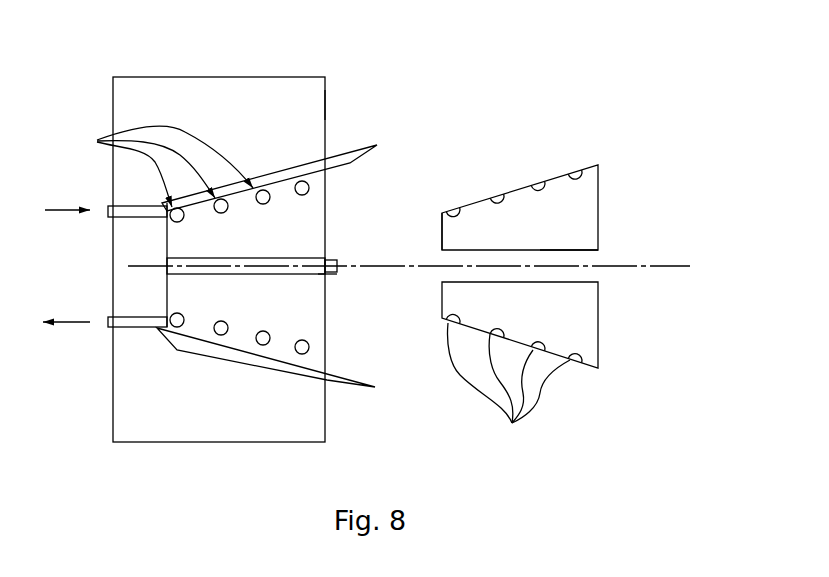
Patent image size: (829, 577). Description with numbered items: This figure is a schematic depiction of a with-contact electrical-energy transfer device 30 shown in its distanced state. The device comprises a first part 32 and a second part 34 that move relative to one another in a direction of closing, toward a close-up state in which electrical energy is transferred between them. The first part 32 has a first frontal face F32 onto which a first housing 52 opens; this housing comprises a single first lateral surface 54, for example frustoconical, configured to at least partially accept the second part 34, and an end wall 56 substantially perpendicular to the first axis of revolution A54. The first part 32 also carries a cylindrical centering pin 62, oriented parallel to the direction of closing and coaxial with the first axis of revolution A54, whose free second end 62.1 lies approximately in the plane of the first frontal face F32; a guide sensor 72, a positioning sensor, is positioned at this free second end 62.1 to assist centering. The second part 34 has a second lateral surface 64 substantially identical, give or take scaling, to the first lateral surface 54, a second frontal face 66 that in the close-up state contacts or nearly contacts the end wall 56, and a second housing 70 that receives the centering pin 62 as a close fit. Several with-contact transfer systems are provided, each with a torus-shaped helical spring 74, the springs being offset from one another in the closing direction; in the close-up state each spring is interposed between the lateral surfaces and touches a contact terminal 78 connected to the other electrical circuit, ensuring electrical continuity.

The electrical-energy transfer device 30 is at (493, 133).
The first part 32 is at (147, 100).
The first frontal face F32 is at (325, 104).
The second part 34 is at (557, 173).
The first housing 52 is at (243, 236).
The first lateral surface 54 is at (258, 206).
The first axis of revolution A54 is at (150, 267).
The end wall 56 is at (170, 236).
The centering pin 62 is at (245, 283).
The free second end 62.1 is at (328, 259).
The second lateral surface 64 is at (515, 187).
The second frontal face 66 is at (442, 233).
The second housing 70 is at (562, 258).
The guide sensor 72 is at (330, 276).
The torus-shaped helical spring 74 is at (298, 58).
The contact terminal 78 is at (514, 384).